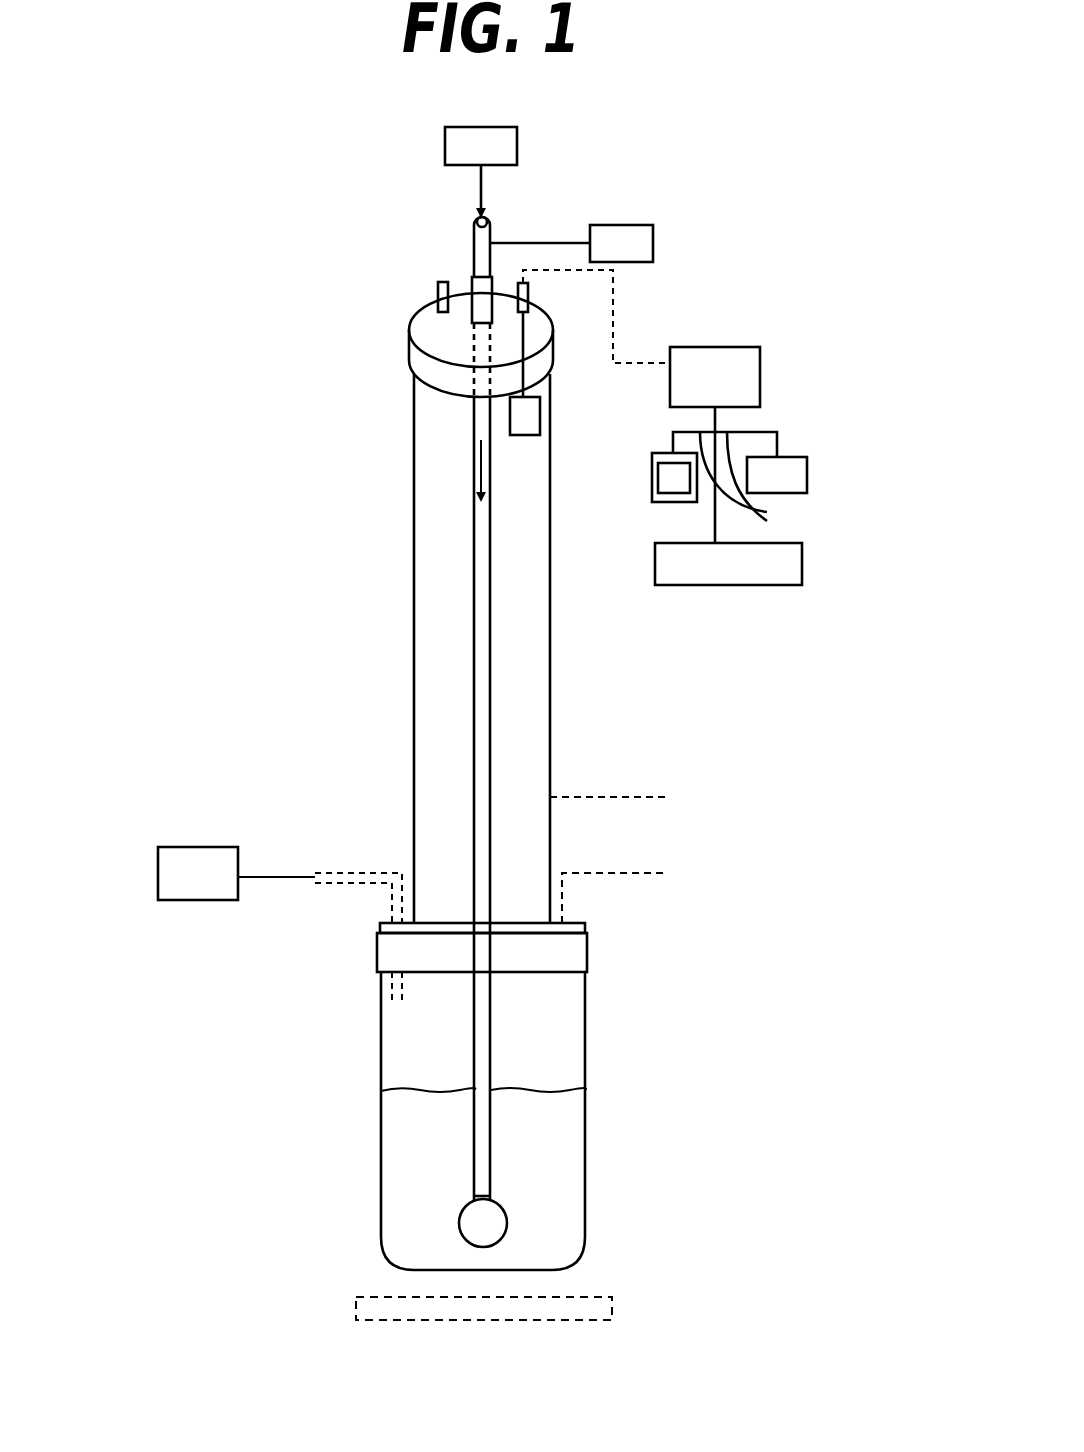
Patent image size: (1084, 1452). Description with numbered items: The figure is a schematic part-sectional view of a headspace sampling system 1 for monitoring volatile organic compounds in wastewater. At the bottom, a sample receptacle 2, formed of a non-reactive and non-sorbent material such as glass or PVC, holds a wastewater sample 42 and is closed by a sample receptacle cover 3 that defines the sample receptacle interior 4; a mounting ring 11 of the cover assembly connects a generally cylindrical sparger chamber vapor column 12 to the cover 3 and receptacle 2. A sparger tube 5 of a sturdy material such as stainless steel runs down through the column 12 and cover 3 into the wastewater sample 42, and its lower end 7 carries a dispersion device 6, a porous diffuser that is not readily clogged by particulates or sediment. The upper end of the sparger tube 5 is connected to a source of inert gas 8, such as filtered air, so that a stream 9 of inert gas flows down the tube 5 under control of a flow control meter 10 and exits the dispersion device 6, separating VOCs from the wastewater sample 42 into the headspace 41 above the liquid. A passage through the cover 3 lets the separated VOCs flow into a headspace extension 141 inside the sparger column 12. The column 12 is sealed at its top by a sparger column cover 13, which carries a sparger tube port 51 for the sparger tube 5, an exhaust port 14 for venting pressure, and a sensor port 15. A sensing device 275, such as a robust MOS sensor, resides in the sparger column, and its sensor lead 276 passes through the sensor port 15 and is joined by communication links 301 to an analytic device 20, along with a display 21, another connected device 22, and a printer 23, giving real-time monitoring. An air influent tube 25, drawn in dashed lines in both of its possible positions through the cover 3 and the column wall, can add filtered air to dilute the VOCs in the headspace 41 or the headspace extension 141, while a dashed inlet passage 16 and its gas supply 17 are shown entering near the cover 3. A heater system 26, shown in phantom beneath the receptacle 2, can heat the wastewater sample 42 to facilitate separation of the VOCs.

The headspace sampling system 1 is at (210, 402).
The sample receptacle 2 is at (381, 1118).
The sample receptacle cover 3 is at (377, 954).
The sample receptacle interior 4 is at (483, 1112).
The sparger tube 5 is at (473, 681).
The dispersion device 6 is at (459, 1222).
The end of the sparger tube 7 is at (491, 1190).
The source of inert gas 8 is at (481, 177).
The stream of inert gas 9 is at (478, 460).
The flow control meter 10 is at (571, 244).
The mounting ring 11 is at (380, 928).
The sparger chamber vapor column 12 is at (412, 597).
The sparger column cover 13 is at (398, 357).
The exhaust port 14 is at (437, 292).
The sensor port 15 is at (528, 297).
The inlet passage 16 is at (386, 862).
The gas supply 17 is at (236, 873).
The analytic device 20 is at (715, 445).
The display 21 is at (652, 496).
The input device 22 is at (807, 475).
The printer 23 is at (655, 577).
The air influent tube 25 is at (638, 790).
The heater system 26 is at (612, 1302).
The headspace 41 is at (534, 1028).
The wastewater sample 42 is at (546, 1223).
The sparger tube port 51 is at (472, 286).
The headspace extension 141 is at (527, 650).
The sensing device 275 is at (530, 418).
The sensor lead 276 is at (525, 338).
The communication links 301 is at (713, 527).